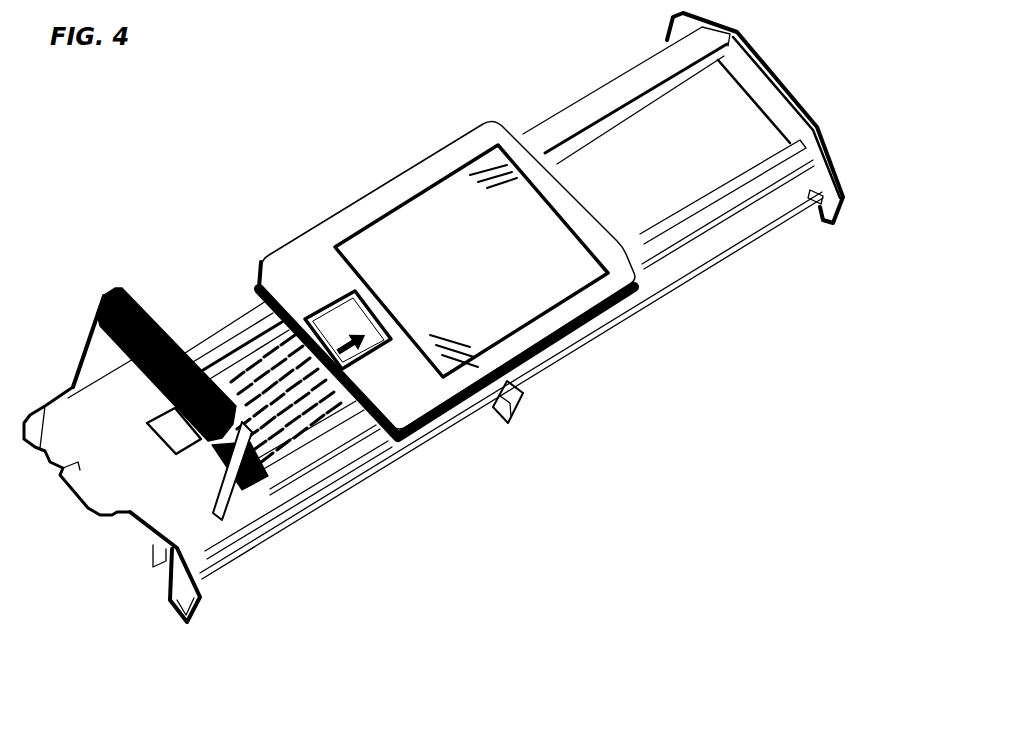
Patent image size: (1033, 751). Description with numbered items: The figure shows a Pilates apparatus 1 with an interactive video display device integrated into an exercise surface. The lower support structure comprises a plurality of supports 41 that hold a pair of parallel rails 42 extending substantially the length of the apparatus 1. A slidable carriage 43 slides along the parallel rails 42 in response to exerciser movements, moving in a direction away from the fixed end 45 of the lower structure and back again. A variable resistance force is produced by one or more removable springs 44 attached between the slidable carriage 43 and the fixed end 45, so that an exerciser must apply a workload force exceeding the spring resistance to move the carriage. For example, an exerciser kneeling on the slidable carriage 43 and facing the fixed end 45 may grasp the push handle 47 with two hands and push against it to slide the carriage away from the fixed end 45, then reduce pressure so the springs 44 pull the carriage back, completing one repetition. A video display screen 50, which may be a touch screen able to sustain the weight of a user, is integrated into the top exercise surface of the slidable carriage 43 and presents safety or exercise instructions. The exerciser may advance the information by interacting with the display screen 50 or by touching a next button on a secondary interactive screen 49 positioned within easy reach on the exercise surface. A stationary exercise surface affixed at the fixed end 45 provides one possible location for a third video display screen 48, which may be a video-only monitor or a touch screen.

The Pilates apparatus 1 is at (747, 287).
The supports 41 is at (773, 73).
The parallel rails 42 is at (733, 182).
The slidable carriage 43 is at (448, 138).
The removable springs 44 is at (307, 433).
The fixed end 45 is at (97, 483).
The push handle 47 is at (142, 317).
The third video display screen 48 is at (163, 443).
The secondary interactive screen 49 is at (387, 347).
The video display screen 50 is at (520, 320).